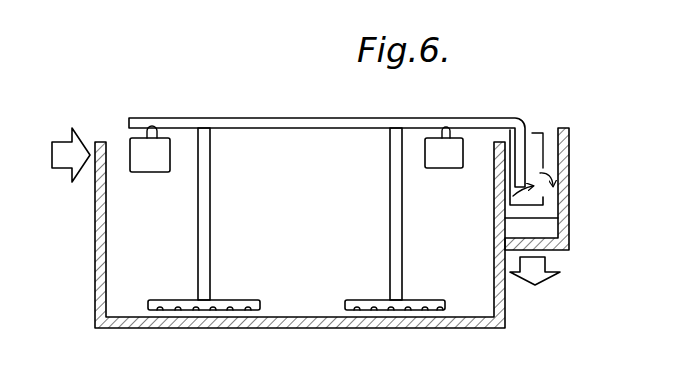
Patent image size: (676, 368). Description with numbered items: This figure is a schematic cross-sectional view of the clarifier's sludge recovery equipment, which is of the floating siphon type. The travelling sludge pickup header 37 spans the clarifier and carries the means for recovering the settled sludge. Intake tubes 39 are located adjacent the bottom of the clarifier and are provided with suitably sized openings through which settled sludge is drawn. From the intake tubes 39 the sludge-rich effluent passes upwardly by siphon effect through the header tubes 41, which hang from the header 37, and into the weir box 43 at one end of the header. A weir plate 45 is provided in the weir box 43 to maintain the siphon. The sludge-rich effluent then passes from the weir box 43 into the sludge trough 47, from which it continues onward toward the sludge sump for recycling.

The travelling sludge pickup header 37 is at (262, 118).
The intake tubes 39 is at (162, 300).
The header tubes 41 is at (203, 210).
The weir box 43 is at (533, 136).
The weir plate 45 is at (545, 195).
The sludge trough 47 is at (536, 236).